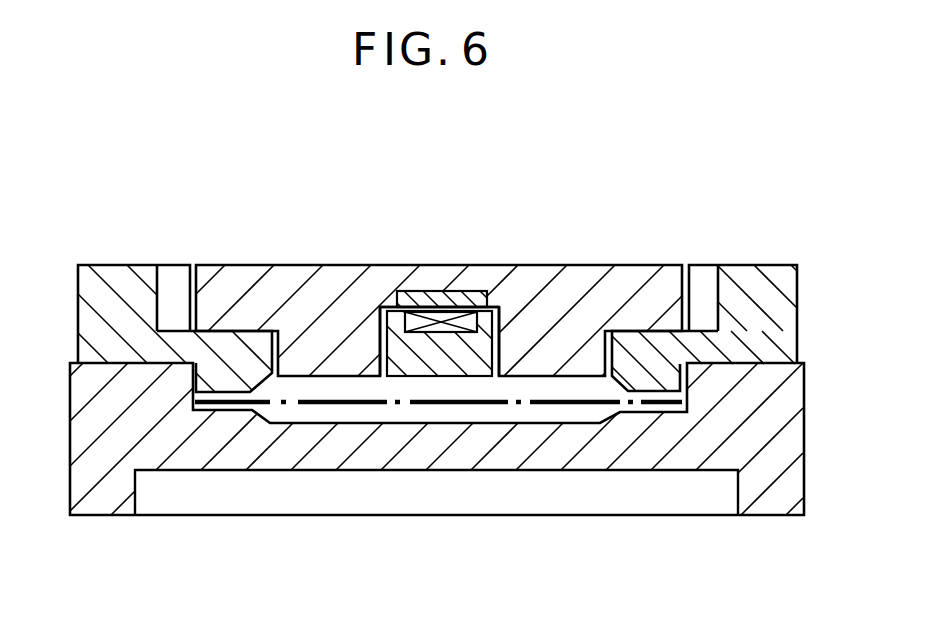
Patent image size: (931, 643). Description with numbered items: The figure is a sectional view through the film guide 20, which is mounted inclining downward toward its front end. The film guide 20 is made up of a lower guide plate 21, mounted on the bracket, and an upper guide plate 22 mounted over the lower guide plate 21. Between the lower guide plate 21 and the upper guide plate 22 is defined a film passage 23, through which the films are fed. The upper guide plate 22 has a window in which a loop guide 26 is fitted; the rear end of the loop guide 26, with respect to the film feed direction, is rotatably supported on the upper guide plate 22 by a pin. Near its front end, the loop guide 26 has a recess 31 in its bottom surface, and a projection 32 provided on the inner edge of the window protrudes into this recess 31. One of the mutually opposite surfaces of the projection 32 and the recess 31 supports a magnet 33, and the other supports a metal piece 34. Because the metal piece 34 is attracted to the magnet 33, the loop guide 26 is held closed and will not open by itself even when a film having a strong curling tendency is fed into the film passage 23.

The film guide 20 is at (99, 260).
The lower guide plate 21 is at (402, 460).
The upper guide plate 22 is at (140, 268).
The film passage 23 is at (230, 405).
The loop guide 26 is at (278, 268).
The recess 31 is at (490, 334).
The projection 32 is at (487, 336).
The magnet 33 is at (464, 306).
The metal piece 34 is at (417, 291).